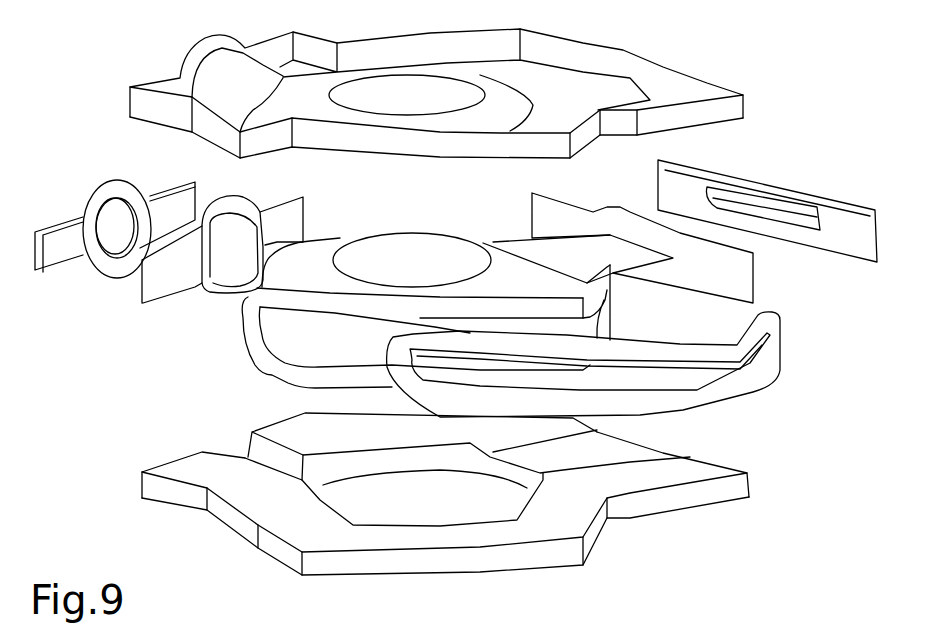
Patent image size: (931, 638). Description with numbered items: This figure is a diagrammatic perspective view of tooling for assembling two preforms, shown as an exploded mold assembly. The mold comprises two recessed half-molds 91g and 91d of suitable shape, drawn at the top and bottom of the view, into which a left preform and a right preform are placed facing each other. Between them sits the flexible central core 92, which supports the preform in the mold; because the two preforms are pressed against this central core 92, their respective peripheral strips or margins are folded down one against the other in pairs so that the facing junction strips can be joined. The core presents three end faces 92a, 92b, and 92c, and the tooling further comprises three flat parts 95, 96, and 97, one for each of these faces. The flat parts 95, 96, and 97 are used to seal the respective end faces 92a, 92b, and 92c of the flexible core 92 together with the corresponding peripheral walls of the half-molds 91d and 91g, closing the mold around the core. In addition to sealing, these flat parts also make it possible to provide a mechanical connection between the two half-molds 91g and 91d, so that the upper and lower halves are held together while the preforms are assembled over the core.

The recessed half-mold 91g is at (687, 77).
The flat part 97 is at (794, 182).
The flat part 95 is at (57, 223).
The end face of the flexible core 92a is at (147, 305).
The central core 92 is at (373, 238).
The end face of the flexible core 92c is at (753, 275).
The end face of the flexible core 92b is at (276, 373).
The flat part 96 is at (776, 386).
The recessed half-mold 91d is at (692, 498).